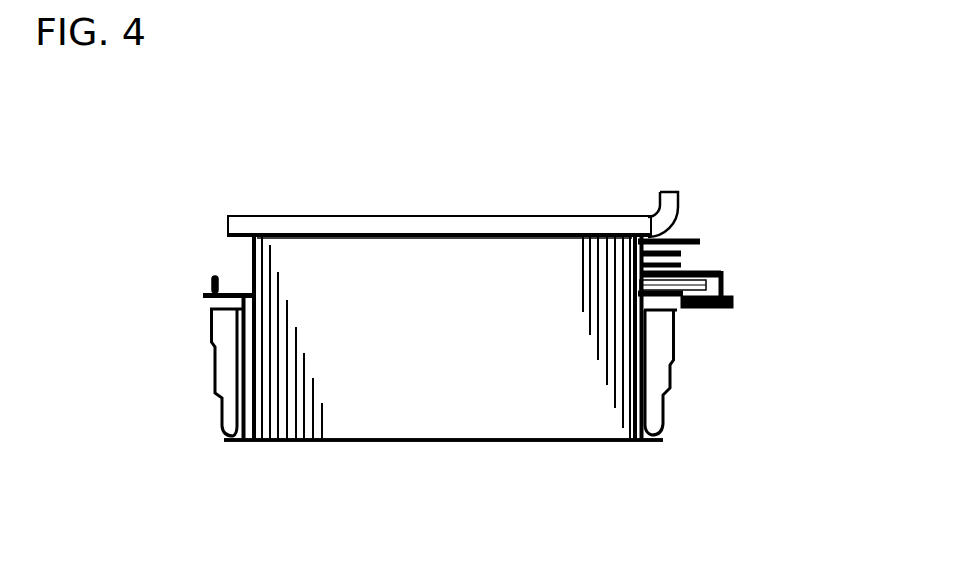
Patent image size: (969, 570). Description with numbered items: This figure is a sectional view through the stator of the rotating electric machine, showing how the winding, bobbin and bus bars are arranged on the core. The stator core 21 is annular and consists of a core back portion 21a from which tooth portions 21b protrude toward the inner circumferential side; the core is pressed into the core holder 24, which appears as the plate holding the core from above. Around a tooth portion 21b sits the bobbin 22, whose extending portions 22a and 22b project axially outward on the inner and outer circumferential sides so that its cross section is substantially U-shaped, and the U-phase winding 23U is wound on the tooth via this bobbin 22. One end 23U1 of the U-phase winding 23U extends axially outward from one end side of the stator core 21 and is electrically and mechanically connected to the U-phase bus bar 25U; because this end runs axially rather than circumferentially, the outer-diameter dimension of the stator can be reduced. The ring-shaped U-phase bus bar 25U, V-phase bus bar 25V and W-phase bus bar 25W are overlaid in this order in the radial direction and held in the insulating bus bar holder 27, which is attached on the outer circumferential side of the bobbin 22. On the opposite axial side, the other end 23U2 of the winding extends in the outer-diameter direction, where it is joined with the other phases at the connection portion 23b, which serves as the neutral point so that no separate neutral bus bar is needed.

The stator core 21 is at (375, 441).
The core back portion 21a is at (346, 264).
The tooth portion 21b is at (442, 412).
The bobbin 22 is at (245, 362).
The extending portion 22a is at (234, 442).
The extending portion 22b is at (208, 305).
The U-phase winding 23U is at (227, 372).
The one end of U-phase winding 23U1 is at (690, 307).
The other end of U-phase winding 23U2 is at (210, 287).
The connection portion 23b is at (214, 274).
The core holder 24 is at (467, 232).
The U-phase bus bar 25U is at (712, 283).
The V-phase bus bar 25V is at (653, 240).
The W-phase bus bar 25W is at (650, 237).
The bus bar holder 27 is at (683, 237).